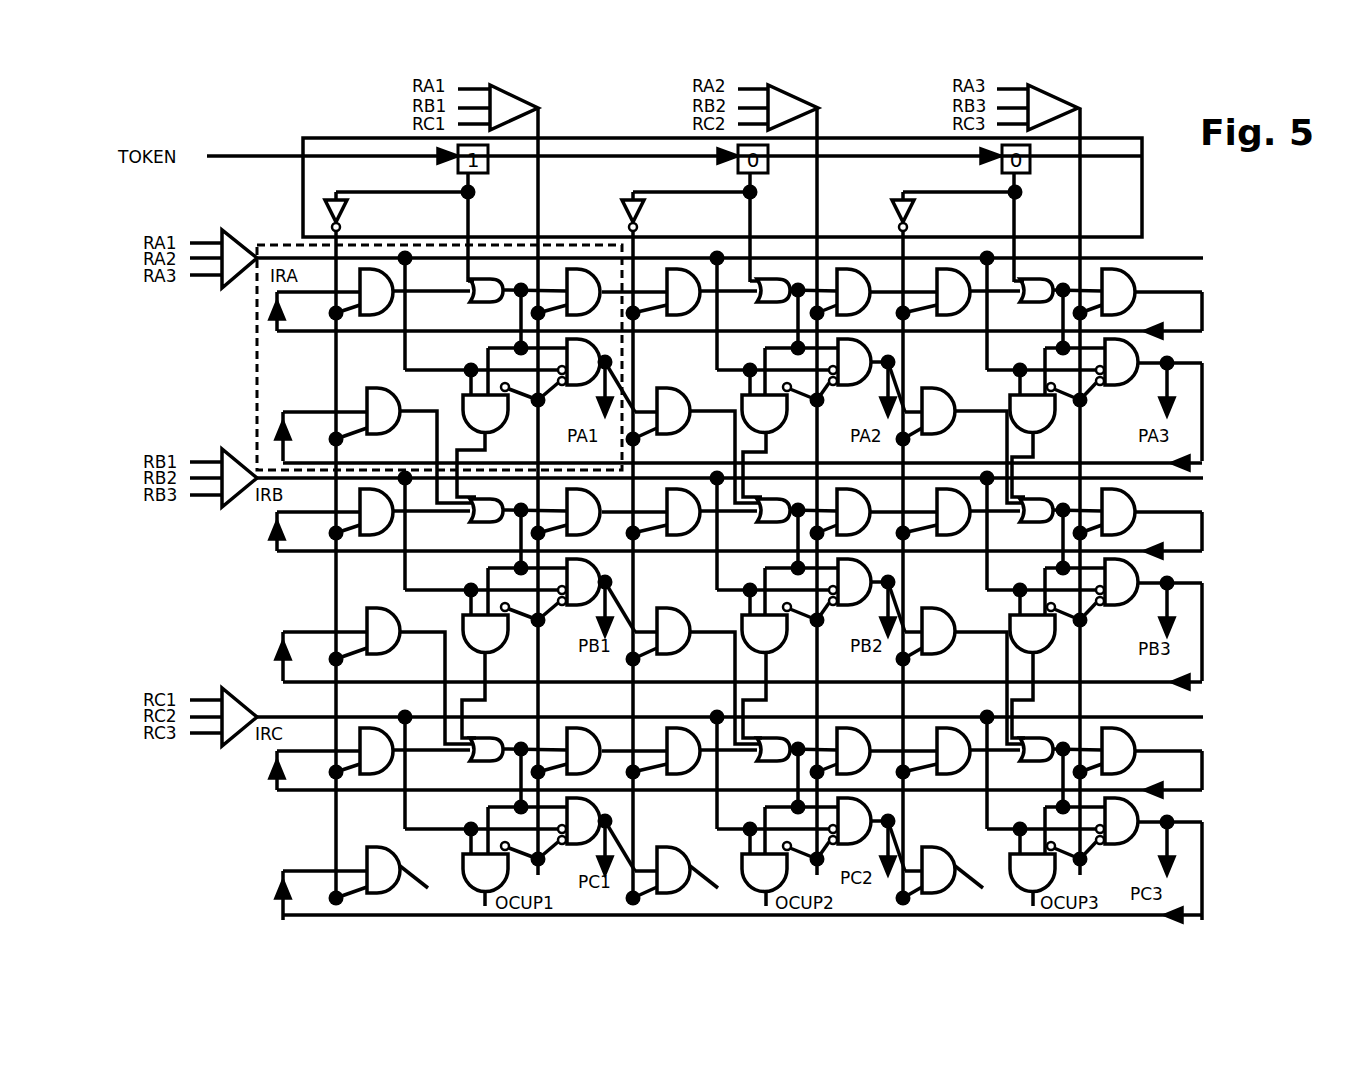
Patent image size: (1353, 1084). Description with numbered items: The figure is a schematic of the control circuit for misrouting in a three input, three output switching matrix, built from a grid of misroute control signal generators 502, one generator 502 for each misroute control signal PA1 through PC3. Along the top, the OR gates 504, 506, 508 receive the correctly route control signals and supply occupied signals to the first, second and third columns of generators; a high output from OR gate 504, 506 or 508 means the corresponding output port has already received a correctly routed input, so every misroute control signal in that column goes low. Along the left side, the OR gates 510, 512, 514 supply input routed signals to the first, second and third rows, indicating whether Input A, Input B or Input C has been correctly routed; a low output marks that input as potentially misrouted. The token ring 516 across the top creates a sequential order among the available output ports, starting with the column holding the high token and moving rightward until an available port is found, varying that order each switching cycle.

The misroute control signal generator 502 is at (255, 333).
The OR gate 504 is at (542, 88).
The OR gate 506 is at (810, 88).
The OR gate 508 is at (1071, 88).
The OR gate 510 is at (232, 222).
The OR gate 512 is at (232, 427).
The OR gate 514 is at (232, 677).
The token ring 516 is at (700, 168).